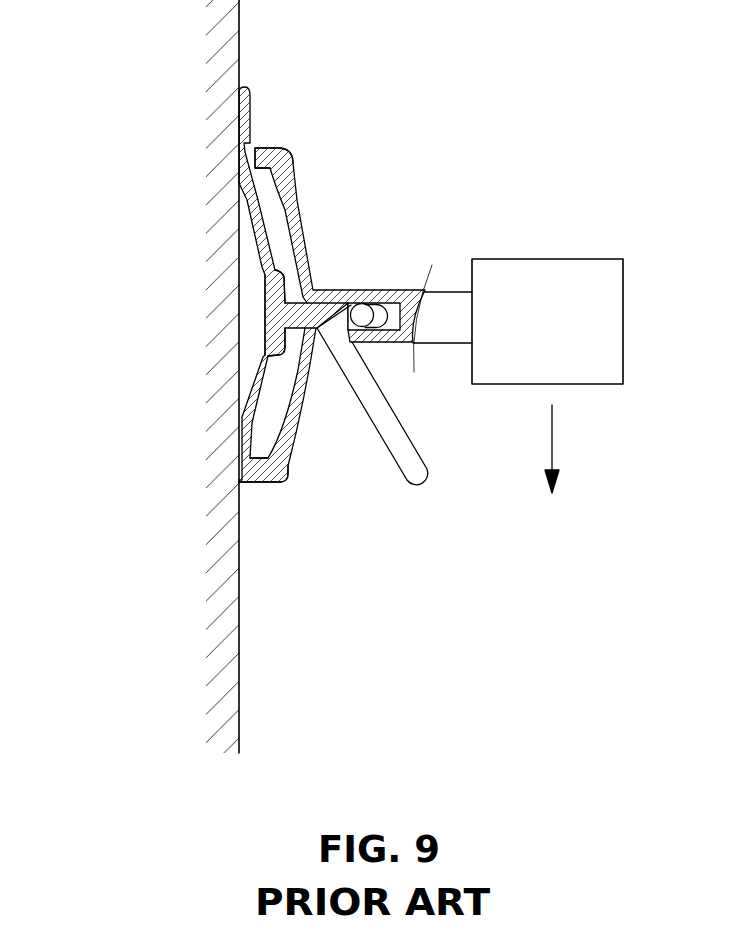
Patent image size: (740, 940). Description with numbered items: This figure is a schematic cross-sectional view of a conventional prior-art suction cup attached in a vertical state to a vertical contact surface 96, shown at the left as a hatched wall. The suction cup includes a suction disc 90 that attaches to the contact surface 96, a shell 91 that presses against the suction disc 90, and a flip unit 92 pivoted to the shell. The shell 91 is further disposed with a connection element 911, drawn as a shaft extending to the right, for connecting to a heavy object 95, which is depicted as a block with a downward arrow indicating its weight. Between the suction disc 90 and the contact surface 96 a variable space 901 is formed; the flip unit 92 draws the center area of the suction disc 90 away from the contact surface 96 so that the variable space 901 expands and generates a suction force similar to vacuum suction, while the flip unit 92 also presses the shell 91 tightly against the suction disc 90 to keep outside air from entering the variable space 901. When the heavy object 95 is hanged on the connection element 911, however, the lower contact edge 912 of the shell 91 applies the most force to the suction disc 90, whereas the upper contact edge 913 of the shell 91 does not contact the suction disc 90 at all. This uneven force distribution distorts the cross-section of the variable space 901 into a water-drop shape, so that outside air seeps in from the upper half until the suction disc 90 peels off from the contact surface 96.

The suction disc 90 is at (306, 328).
The shell 91 is at (307, 258).
The flip unit 92 is at (400, 443).
The heavy object 95 is at (567, 292).
The contact surface 96 is at (239, 27).
The variable space 901 is at (252, 312).
The connection element 911 is at (437, 310).
The lower contact edge 912 is at (257, 483).
The upper contact edge 913 is at (285, 147).